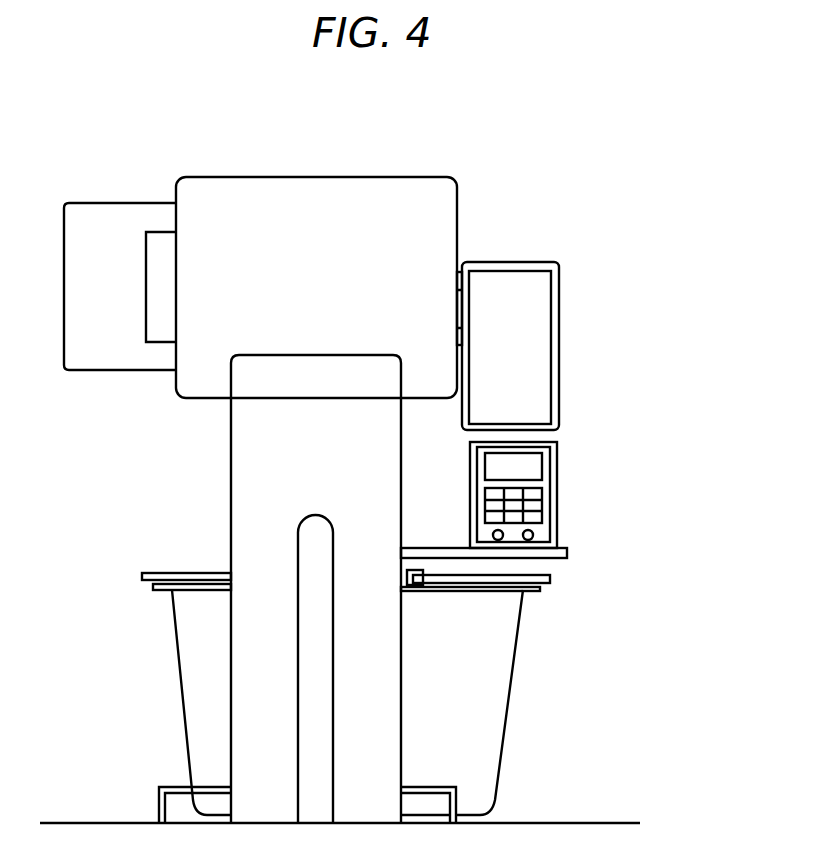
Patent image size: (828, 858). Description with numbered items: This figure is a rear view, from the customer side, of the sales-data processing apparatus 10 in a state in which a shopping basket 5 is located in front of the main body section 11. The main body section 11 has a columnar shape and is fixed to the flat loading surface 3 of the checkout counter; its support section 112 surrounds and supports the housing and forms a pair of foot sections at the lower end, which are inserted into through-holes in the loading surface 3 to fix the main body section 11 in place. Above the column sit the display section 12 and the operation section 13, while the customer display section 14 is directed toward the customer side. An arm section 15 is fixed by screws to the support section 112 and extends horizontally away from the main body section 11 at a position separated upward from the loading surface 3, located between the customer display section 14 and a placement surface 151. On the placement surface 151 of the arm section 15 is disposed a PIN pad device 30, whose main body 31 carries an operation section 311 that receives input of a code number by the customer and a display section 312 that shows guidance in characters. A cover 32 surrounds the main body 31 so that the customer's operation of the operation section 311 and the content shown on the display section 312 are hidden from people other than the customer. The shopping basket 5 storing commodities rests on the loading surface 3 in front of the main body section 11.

The sales-data processing apparatus 10 is at (421, 136).
The main body section 11 is at (245, 452).
The support section 112 is at (243, 528).
The display section 12 is at (258, 176).
The operation section 13 is at (122, 202).
The customer display section 14 is at (522, 261).
The arm section 15 is at (567, 553).
The placement surface 151 is at (441, 548).
The PIN pad device 30 is at (523, 443).
The main body 31 is at (664, 467).
The operation section 311 is at (536, 506).
The display section 312 is at (528, 464).
The cover 32 is at (559, 455).
The shopping basket 5 is at (193, 674).
The loading surface 3 is at (592, 822).